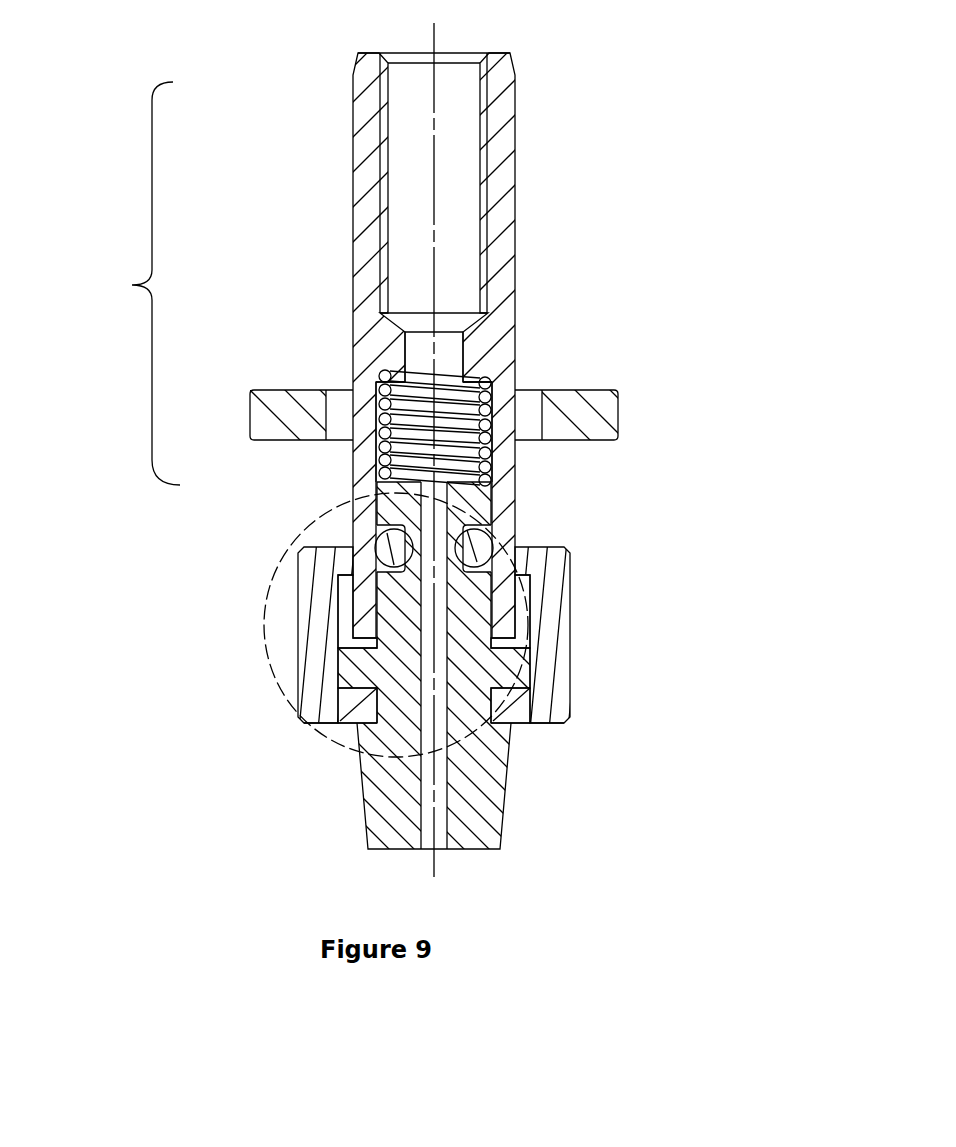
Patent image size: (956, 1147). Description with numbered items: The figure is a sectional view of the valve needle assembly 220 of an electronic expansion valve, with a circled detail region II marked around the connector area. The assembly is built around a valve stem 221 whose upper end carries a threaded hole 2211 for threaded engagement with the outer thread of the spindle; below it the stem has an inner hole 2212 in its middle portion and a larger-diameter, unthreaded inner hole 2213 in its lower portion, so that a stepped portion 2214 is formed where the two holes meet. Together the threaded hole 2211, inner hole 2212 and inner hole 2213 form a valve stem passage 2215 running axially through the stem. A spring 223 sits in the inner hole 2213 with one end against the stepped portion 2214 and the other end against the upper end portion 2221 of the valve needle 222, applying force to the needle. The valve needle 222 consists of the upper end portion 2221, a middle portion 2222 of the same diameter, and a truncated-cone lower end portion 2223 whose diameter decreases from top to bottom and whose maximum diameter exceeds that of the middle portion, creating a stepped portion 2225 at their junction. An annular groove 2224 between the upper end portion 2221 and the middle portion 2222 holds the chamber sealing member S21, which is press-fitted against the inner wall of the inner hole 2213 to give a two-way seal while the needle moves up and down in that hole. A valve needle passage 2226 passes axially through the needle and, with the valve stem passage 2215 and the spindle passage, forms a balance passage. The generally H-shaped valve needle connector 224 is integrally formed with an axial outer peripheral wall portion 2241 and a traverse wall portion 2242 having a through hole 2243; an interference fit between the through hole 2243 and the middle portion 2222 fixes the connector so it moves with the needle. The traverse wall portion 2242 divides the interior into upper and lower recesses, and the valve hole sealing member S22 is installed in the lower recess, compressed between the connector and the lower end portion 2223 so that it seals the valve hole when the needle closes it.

The valve needle assembly 220 is at (600, 108).
The valve stem 221 is at (548, 248).
The threaded hole 2211 is at (405, 98).
The inner hole 2212 is at (420, 345).
The inner hole 2213 is at (385, 455).
The stepped portion 2214 is at (458, 392).
The valve stem passage 2215 is at (279, 270).
The spring 223 is at (460, 386).
The valve needle 222 is at (534, 832).
The upper end portion 2221 is at (480, 497).
The middle portion 2222 is at (477, 613).
The lower end portion 2223 is at (475, 785).
The annular groove 2224 is at (395, 522).
The stepped portion 2225 is at (498, 725).
The valve needle passage 2226 is at (432, 823).
The valve needle connector 224 is at (543, 657).
The outer peripheral wall portion 2241 is at (300, 583).
The traverse wall portion 2242 is at (345, 653).
The through hole 2243 is at (345, 664).
The chamber sealing member S21 is at (478, 538).
The valve hole sealing member S22 is at (345, 724).
The enlarged detail region II is at (298, 540).